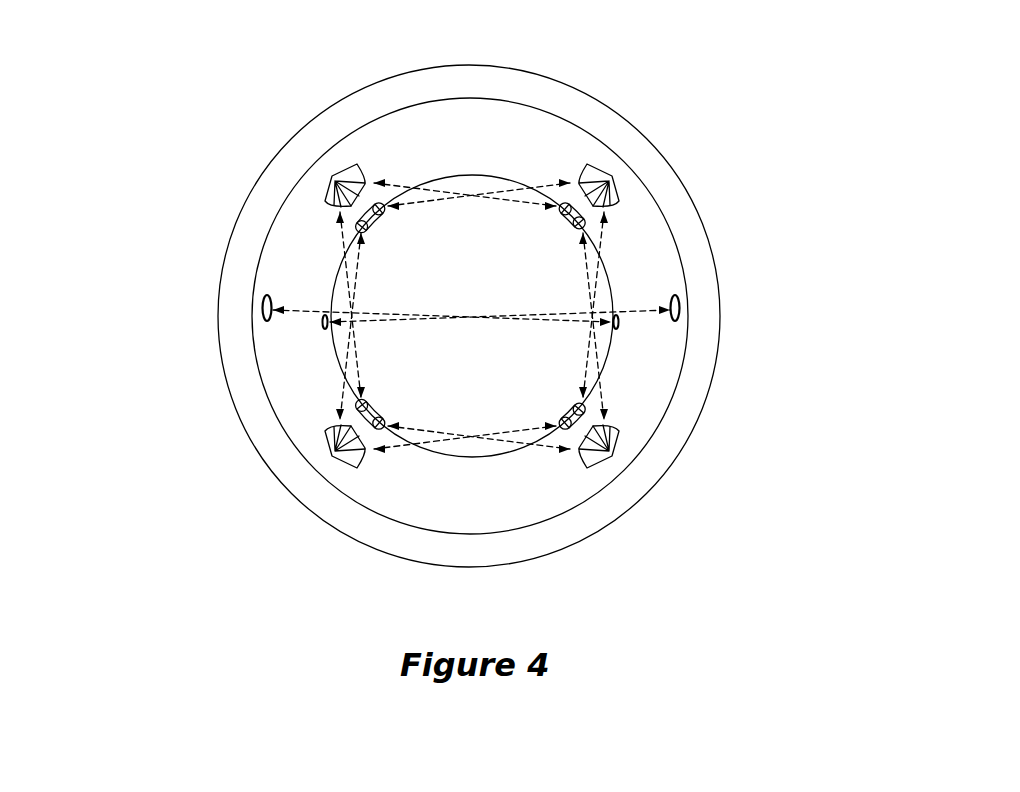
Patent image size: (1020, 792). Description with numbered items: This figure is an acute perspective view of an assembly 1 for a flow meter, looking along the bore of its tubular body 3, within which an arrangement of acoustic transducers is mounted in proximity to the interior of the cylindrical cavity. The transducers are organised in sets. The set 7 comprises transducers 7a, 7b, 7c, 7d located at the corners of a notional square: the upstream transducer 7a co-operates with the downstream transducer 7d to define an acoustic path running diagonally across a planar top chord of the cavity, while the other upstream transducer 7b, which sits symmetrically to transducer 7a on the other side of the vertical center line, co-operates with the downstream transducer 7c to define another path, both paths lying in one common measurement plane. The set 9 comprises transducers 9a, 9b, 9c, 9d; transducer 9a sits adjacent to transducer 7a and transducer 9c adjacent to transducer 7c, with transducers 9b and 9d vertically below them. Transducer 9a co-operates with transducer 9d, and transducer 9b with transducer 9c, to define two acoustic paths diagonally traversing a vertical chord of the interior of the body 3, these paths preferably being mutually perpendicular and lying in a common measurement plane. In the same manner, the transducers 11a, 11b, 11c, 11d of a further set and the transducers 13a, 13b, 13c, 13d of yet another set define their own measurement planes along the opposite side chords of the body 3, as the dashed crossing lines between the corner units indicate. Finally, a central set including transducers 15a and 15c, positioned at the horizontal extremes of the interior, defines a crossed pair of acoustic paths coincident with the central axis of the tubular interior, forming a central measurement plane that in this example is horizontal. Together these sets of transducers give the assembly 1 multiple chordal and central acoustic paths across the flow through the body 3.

The assembly 1 is at (248, 105).
The tubular body 3 is at (552, 86).
The set of acoustic transducers 7 is at (312, 178).
The upstream transducer 7a is at (352, 175).
The upstream transducer 7b is at (590, 172).
The downstream transducer 7c is at (385, 210).
The downstream transducer 7d is at (559, 210).
The set of acoustic transducers 9 is at (310, 458).
The acoustic transducer 9a is at (333, 198).
The acoustic transducer 9b is at (330, 434).
The acoustic transducer 9c is at (366, 231).
The acoustic transducer 9d is at (364, 401).
The acoustic transducer 11a is at (338, 452).
The acoustic transducer 11b is at (588, 463).
The acoustic transducer 11c is at (384, 421).
The acoustic transducer 11d is at (560, 421).
The acoustic transducer 13a is at (614, 195).
The acoustic transducer 13b is at (617, 437).
The acoustic transducer 13c is at (577, 229).
The acoustic transducer 13d is at (577, 403).
The acoustic transducer 15a is at (262, 304).
The acoustic transducer 15c is at (320, 323).